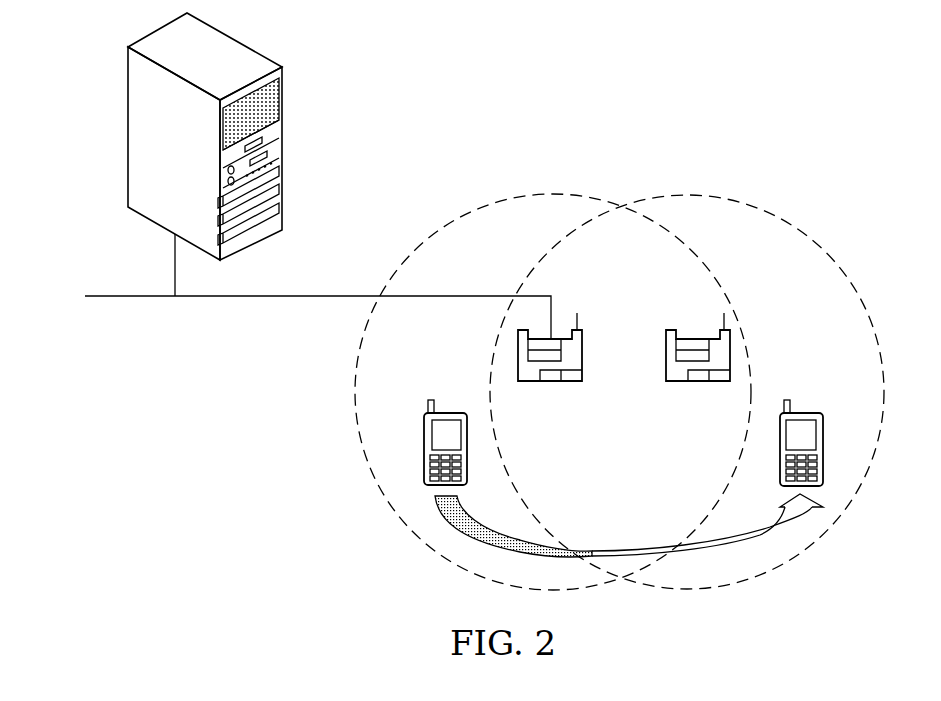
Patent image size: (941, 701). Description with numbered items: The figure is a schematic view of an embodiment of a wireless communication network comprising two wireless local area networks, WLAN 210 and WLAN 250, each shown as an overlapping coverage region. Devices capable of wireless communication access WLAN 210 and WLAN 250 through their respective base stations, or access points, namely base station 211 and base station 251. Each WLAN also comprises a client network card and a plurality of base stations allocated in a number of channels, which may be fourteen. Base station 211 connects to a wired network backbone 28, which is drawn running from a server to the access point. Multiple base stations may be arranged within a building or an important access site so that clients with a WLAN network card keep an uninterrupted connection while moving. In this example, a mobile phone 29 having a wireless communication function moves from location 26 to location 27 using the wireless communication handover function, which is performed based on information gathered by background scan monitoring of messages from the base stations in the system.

The wired network backbone 28 is at (330, 296).
The wireless local area network 210 is at (553, 194).
The wireless local area network 250 is at (686, 194).
The base station 211 is at (550, 385).
The base station 251 is at (696, 385).
The mobile phone 29 is at (443, 413).
The location 26 is at (424, 495).
The location 27 is at (823, 497).